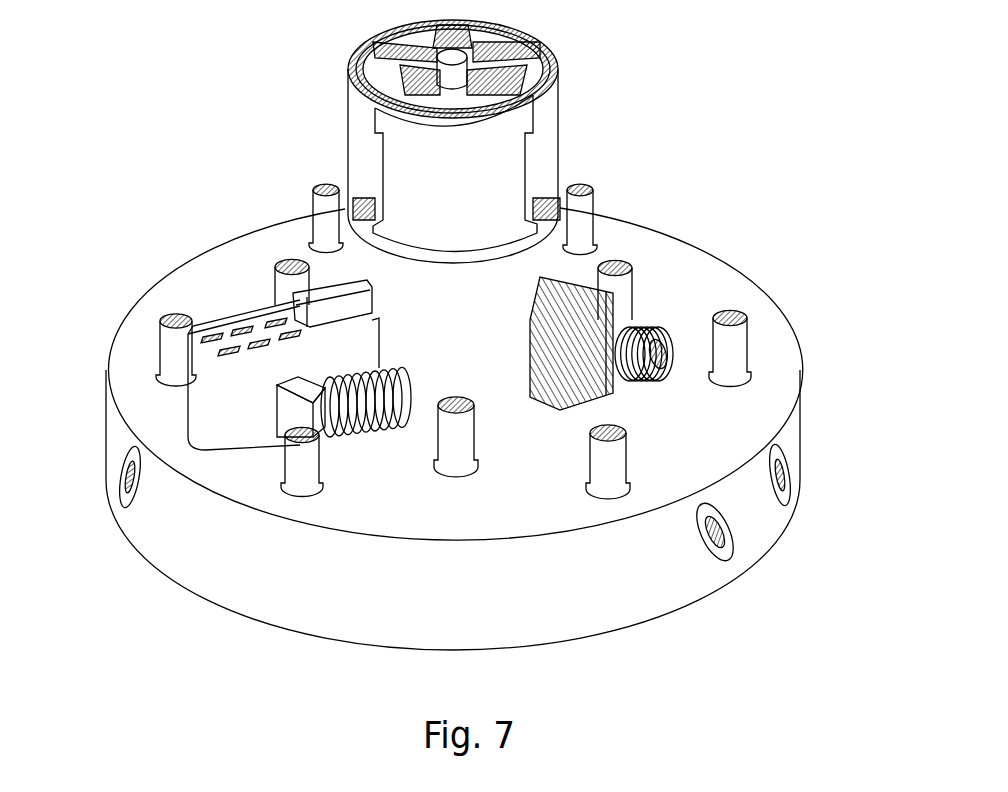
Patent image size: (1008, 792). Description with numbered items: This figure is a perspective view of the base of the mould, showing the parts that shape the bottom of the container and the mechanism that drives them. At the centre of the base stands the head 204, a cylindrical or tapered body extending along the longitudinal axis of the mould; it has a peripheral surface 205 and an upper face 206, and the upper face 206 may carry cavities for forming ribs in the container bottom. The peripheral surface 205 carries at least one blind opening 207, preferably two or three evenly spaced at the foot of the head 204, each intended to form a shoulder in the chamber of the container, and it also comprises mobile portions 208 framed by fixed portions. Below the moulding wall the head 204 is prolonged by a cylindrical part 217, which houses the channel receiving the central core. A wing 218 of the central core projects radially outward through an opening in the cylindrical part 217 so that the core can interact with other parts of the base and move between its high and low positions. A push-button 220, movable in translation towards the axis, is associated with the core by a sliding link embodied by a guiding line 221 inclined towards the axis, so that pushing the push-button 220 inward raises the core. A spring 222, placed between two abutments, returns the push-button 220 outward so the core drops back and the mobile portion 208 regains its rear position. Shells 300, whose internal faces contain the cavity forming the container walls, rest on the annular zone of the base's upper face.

The head 204 is at (586, 60).
The upper face 206 is at (517, 60).
The blind opening 207 is at (517, 60).
The peripheral surface 205 is at (437, 180).
The mobile portion 208 is at (550, 157).
The shell 300 is at (650, 250).
The guiding line 221 is at (577, 360).
The wing 218 is at (597, 397).
The push-button 220 is at (250, 397).
The spring 222 is at (357, 398).
The cylindrical part 217 is at (430, 393).